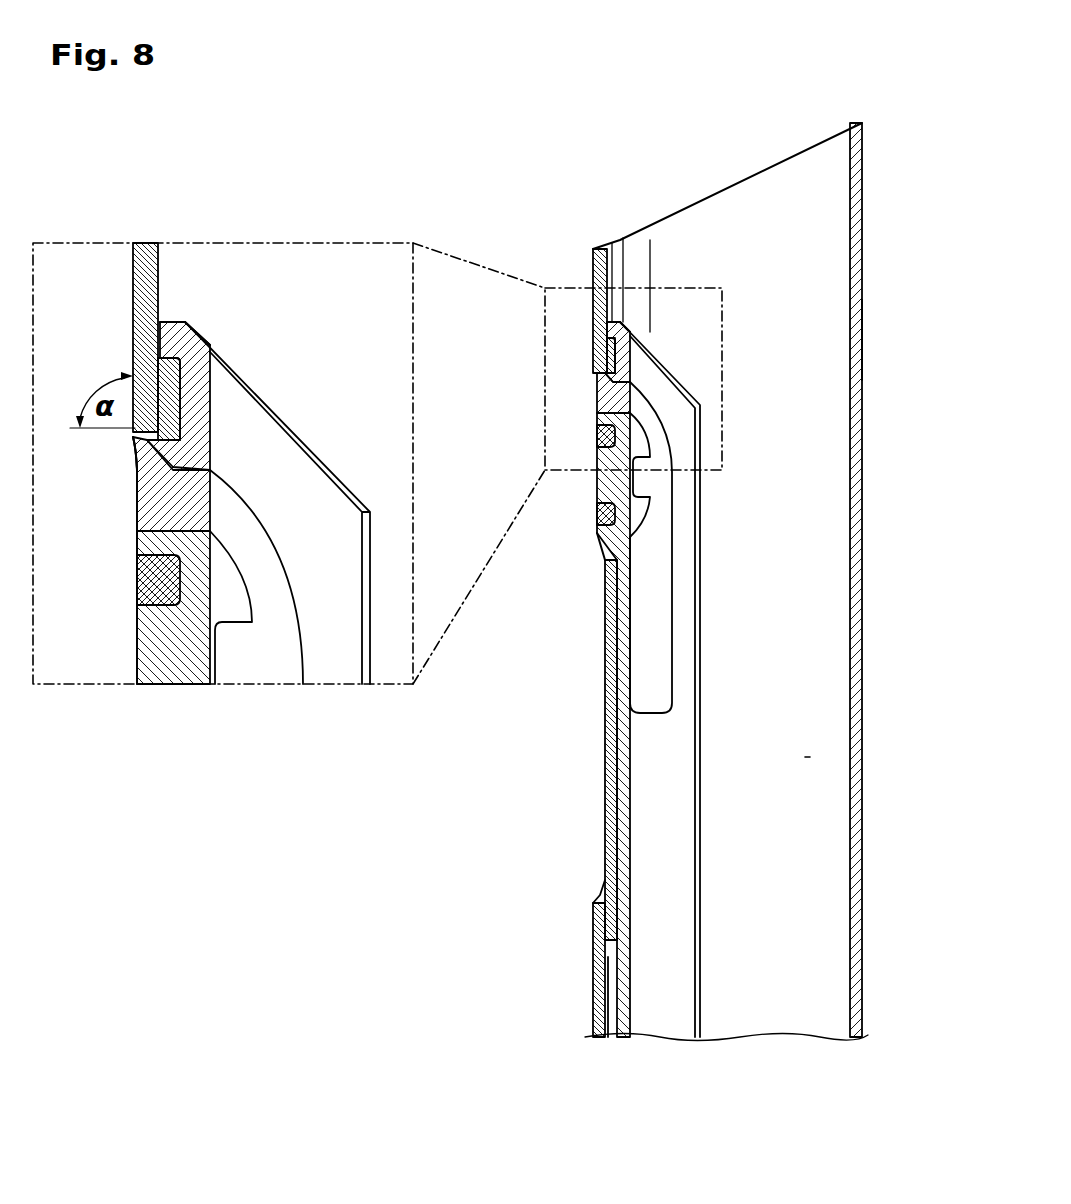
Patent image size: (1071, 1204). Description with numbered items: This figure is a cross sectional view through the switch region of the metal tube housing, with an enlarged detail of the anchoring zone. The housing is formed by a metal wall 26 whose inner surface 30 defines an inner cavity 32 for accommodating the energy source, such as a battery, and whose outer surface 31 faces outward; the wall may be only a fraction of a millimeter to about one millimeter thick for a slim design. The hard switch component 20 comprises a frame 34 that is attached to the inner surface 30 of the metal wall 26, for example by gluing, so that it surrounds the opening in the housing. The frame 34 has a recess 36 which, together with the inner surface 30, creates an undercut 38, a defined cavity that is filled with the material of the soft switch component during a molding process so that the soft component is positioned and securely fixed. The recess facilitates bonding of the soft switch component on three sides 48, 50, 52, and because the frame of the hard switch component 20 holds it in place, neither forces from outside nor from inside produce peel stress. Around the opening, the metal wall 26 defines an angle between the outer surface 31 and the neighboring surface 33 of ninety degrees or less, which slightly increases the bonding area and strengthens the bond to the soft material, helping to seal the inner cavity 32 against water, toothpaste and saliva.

The hard switch component 20 is at (318, 665).
The metal wall 26 is at (855, 555).
The inner surface 30 is at (838, 186).
The outer surface 31 is at (862, 333).
The inner cavity 32 is at (805, 757).
The neighboring surface 33 is at (135, 455).
The frame 34 is at (348, 665).
The recess 36 is at (171, 355).
The undercut 38 is at (172, 400).
The side 48 is at (182, 357).
The side 50 is at (161, 320).
The side 52 is at (157, 372).